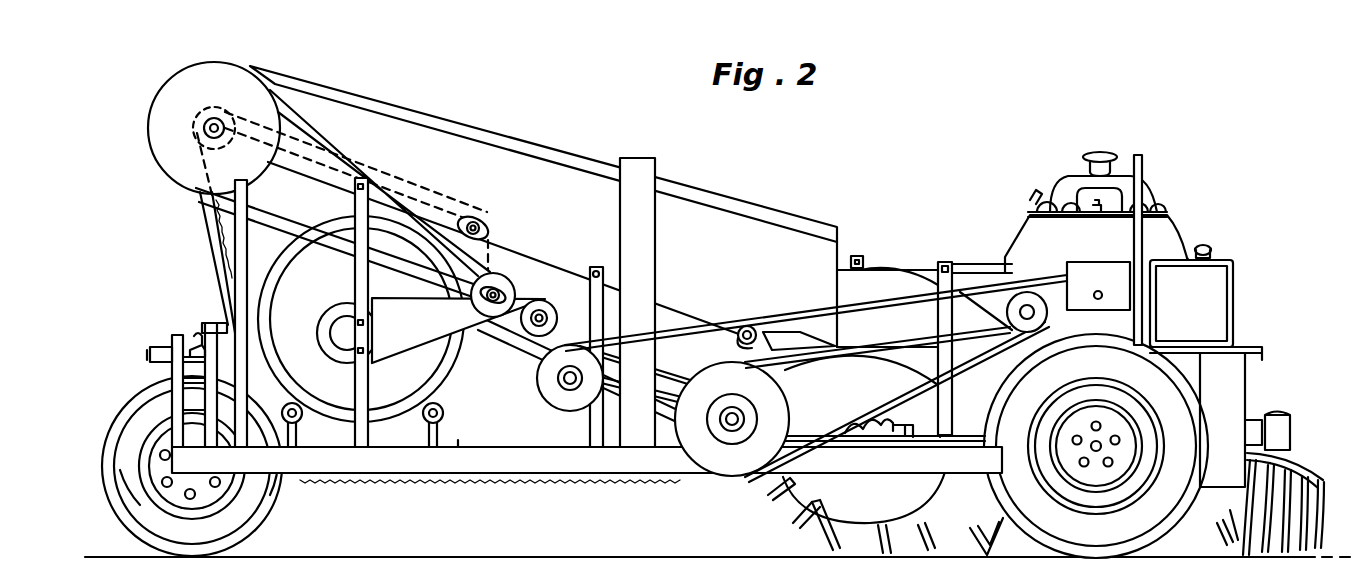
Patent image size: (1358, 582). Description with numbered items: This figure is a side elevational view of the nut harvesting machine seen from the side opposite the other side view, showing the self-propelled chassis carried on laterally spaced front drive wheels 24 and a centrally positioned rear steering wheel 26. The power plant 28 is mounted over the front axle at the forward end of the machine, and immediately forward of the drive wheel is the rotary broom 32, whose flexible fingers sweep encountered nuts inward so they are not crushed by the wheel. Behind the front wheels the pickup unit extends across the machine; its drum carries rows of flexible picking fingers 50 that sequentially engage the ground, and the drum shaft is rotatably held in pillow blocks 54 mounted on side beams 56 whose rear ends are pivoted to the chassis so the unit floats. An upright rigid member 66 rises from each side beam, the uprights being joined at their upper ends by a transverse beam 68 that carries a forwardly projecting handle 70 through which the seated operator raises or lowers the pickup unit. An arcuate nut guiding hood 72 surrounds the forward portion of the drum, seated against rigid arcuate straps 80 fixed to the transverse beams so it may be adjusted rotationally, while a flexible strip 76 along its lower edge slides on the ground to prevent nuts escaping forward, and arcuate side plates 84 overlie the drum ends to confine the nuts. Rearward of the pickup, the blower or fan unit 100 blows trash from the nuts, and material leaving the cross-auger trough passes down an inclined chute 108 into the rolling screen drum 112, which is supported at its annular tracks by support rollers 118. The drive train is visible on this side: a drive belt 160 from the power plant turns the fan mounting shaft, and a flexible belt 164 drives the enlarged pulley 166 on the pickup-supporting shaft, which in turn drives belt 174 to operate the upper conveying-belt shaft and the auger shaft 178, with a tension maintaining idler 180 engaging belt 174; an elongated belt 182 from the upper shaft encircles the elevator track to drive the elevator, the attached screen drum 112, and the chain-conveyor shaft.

The front drive wheels 24 is at (1192, 516).
The rear steering wheel 26 is at (258, 497).
The power plant 28 is at (1175, 245).
The rotary broom 32 is at (1308, 448).
The picking fingers 50 is at (850, 524).
The pillow blocks 54 is at (860, 433).
The side beams 56 is at (925, 447).
The upright rigid member 66 is at (942, 369).
The transverse beam 68 is at (946, 262).
The handle 70 is at (978, 268).
The nut guiding hood 72 is at (883, 263).
The flexible strip 76 is at (991, 523).
The arcuate straps 80 is at (981, 298).
The side plates 84 is at (919, 288).
The blower or fan unit 100 is at (538, 428).
The inclined chute 108 is at (410, 335).
The rolling screen drum 112 is at (458, 445).
The support rollers 118 is at (462, 410).
The drive belt 160 is at (898, 300).
The flexible belt 164 is at (962, 380).
The enlarged pulley 166 is at (715, 452).
The belt 174 is at (504, 338).
The auger shaft 178 is at (500, 288).
The tension maintaining idler 180 is at (545, 303).
The elongated belt 182 is at (222, 272).